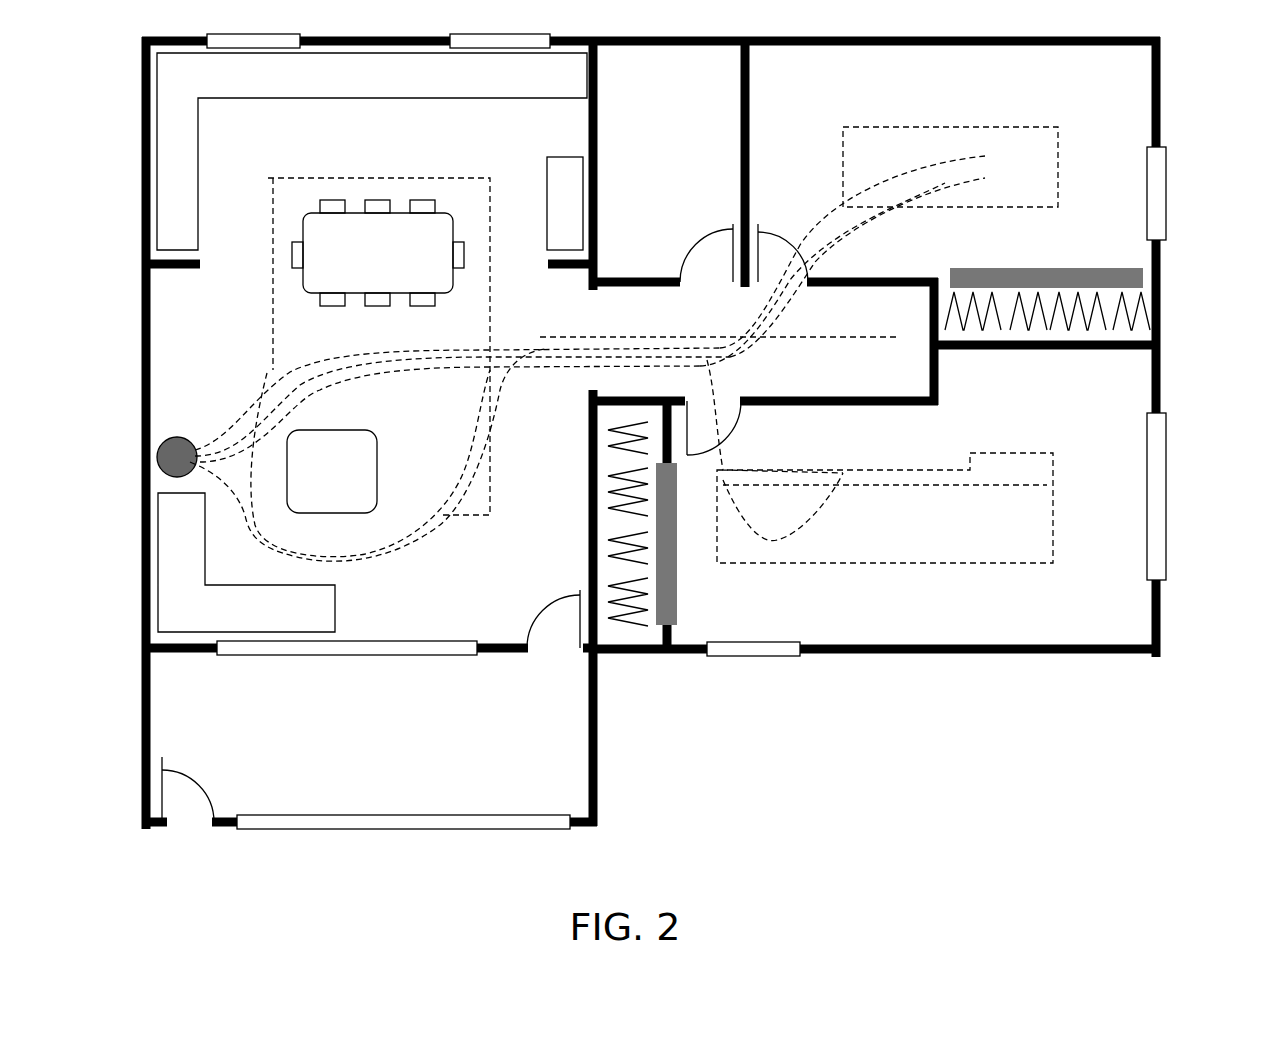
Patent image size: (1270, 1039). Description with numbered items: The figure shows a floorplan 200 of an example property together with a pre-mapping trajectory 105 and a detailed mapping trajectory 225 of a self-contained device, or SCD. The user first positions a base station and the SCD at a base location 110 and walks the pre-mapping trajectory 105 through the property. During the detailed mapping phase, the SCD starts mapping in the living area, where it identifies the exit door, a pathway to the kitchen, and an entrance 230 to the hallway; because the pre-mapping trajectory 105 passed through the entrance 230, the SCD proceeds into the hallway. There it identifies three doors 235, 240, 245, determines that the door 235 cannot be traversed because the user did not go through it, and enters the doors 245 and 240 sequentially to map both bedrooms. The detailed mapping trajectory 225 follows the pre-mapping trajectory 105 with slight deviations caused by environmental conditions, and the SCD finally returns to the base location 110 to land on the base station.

The floorplan 200 is at (1188, 73).
The pre-mapping trajectory 105 is at (310, 357).
The base location 110 is at (173, 440).
The detailed mapping trajectory 225 is at (268, 245).
The entrance 230 is at (570, 324).
The door 235 is at (690, 275).
The door 240 is at (797, 288).
The door 245 is at (720, 399).